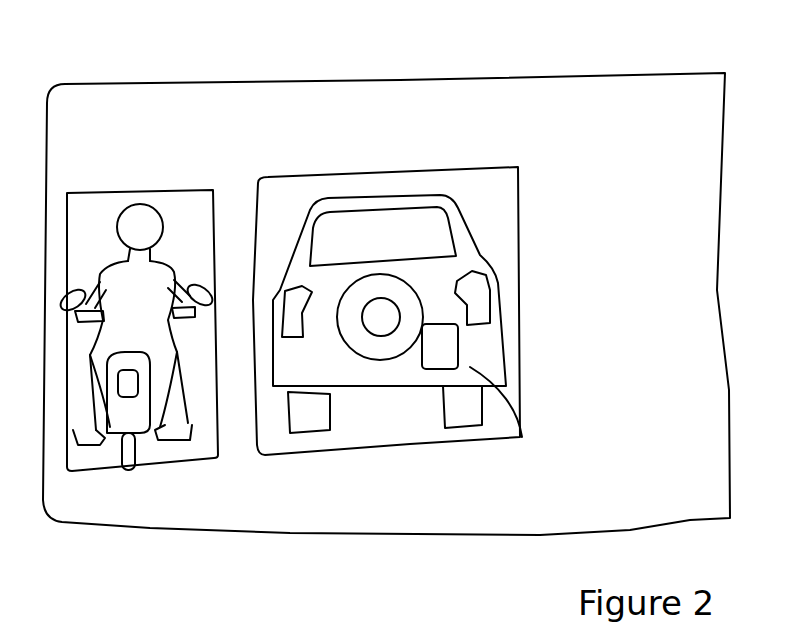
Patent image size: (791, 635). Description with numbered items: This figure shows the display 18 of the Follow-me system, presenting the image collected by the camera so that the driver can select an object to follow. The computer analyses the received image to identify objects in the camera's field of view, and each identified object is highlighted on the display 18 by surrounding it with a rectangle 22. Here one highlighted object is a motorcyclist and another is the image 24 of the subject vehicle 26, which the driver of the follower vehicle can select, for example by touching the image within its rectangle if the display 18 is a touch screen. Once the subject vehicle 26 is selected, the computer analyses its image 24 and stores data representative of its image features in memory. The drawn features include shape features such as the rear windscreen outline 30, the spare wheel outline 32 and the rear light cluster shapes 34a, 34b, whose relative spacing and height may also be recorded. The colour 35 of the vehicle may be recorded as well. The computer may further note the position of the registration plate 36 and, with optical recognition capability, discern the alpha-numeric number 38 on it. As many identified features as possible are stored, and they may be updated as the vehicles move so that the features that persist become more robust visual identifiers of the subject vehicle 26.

The display 18 is at (238, 83).
The rectangle 22 is at (283, 176).
The image 24 is at (518, 245).
The subject vehicle 26 is at (418, 317).
The rear windscreen outline 30 is at (380, 218).
The spare wheel outline 32 is at (380, 360).
The rear light cluster shape 34a is at (490, 300).
The rear light cluster shape 34b is at (283, 325).
The colour 35 is at (437, 281).
The registration plate 36 is at (522, 437).
The alpha-numeric number 38 is at (455, 342).